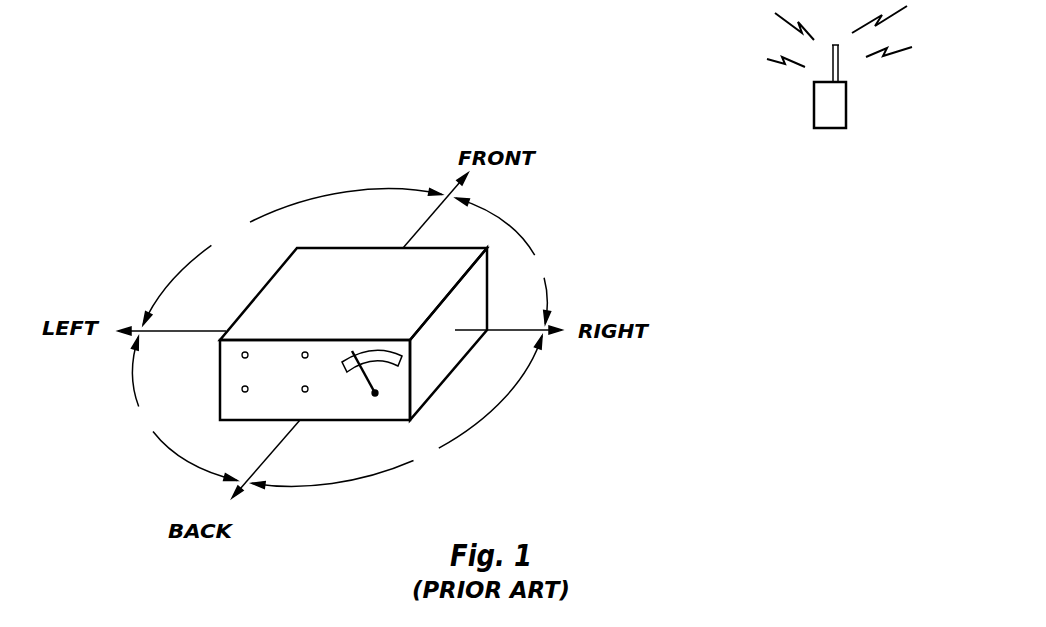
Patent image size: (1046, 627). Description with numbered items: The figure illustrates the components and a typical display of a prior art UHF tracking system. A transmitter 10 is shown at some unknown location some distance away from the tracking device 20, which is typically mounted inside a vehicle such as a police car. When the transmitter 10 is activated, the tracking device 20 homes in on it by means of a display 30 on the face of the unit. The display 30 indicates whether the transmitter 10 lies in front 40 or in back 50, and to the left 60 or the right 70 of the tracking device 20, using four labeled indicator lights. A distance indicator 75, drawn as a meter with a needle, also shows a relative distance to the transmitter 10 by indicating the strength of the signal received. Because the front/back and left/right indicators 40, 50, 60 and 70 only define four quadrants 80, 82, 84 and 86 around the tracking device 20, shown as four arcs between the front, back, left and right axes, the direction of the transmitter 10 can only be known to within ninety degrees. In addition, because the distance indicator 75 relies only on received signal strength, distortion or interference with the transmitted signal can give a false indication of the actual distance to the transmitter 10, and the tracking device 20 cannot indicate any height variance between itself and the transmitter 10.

The transmitter 10 is at (822, 115).
The tracking device 20 is at (307, 305).
The display 30 is at (421, 388).
The front indicator 40 is at (242, 355).
The back indicator 50 is at (304, 352).
The left indicator 60 is at (242, 389).
The right indicator 70 is at (302, 389).
The distance indicator 75 is at (373, 382).
The quadrant 80 is at (292, 257).
The quadrant 82 is at (506, 261).
The quadrant 84 is at (397, 412).
The quadrant 86 is at (185, 409).